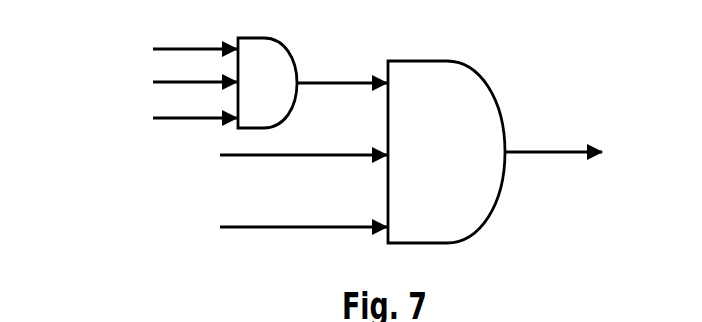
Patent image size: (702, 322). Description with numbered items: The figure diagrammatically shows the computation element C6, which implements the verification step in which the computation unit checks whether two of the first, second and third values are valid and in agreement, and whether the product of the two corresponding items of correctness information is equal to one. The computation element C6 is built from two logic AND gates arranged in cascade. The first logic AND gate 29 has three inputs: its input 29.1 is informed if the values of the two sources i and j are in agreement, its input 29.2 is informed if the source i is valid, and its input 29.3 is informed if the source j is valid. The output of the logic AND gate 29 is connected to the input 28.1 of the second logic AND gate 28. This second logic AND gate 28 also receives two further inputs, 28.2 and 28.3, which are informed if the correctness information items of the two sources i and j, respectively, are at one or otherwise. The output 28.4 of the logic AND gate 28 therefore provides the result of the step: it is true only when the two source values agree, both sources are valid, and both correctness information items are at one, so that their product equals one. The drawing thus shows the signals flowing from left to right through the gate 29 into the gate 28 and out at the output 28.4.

The input of logic AND gate 29 29.1 is at (176, 49).
The input of logic AND gate 29 29.2 is at (173, 82).
The input of logic AND gate 29 29.3 is at (173, 118).
The logic AND gate 29 is at (293, 105).
The input of logic AND gate 28 28.1 is at (337, 81).
The input of logic AND gate 28 28.2 is at (307, 157).
The input of logic AND gate 28 28.3 is at (278, 229).
The logic AND gate 28 is at (495, 209).
The output of logic AND gate 28 28.4 is at (542, 148).
The computation element C6 is at (165, 173).